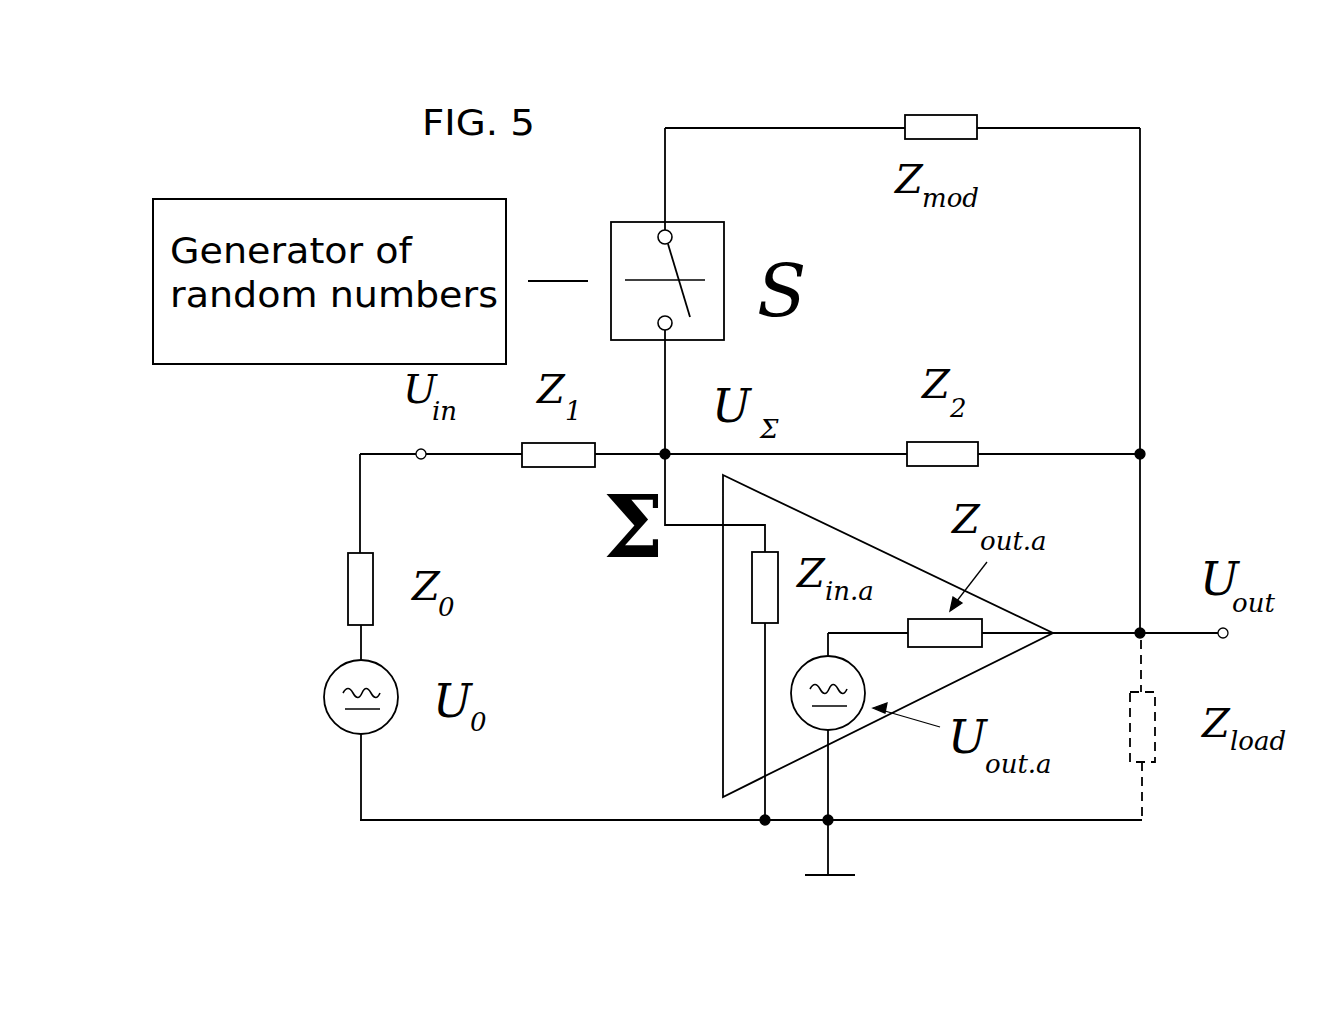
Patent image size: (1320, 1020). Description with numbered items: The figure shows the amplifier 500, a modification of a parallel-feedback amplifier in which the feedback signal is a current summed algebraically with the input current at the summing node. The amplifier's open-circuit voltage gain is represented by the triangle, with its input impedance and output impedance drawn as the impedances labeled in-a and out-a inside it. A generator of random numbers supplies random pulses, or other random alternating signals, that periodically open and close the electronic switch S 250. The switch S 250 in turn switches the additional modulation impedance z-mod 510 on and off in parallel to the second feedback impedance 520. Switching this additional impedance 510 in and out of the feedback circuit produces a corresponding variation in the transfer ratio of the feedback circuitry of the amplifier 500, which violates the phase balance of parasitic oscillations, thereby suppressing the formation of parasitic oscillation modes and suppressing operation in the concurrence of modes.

The amplifier 500 is at (740, 72).
The modulation impedance Z_mod 510 is at (947, 121).
The impedance z_2 520 is at (967, 441).
The electronic switch S 250 is at (702, 222).